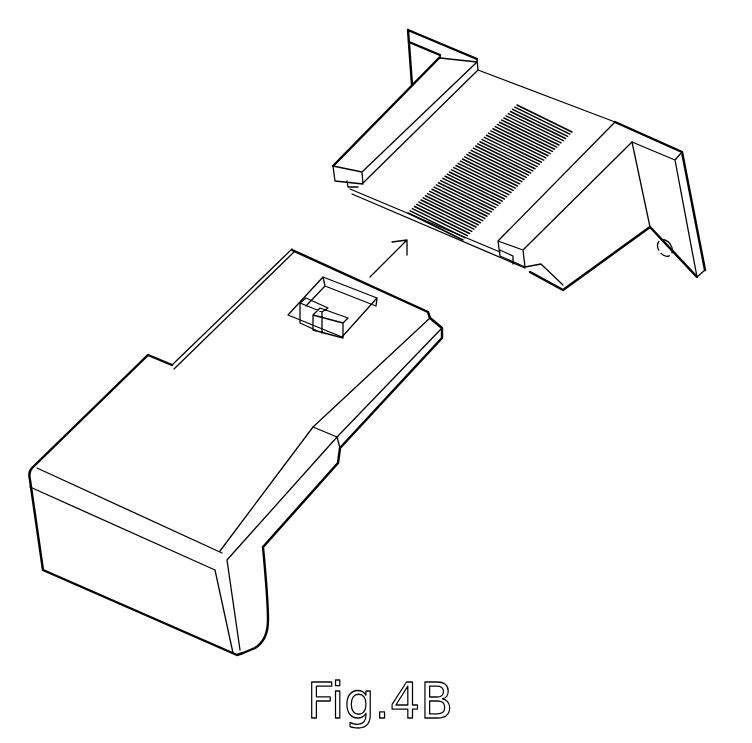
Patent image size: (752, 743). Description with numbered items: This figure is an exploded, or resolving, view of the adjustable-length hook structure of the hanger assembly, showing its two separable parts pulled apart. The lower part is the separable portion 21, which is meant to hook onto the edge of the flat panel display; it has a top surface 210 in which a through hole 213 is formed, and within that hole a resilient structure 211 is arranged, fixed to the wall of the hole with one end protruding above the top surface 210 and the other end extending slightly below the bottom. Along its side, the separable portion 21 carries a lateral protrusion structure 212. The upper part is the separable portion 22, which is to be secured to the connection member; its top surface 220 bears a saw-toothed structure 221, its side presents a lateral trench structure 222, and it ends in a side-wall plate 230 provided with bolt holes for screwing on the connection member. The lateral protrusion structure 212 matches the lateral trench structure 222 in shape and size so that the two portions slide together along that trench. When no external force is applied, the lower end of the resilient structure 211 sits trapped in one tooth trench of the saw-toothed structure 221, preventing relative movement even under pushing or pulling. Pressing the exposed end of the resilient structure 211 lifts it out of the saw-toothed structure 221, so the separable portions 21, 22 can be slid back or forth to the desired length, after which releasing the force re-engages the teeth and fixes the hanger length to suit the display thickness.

The separable portion 21 is at (262, 472).
The top surface 210 is at (235, 345).
The resilient structure 211 is at (302, 302).
The lateral protrusion structure 212 is at (358, 400).
The through hole 213 is at (345, 312).
The separable portion 22 is at (588, 242).
The top surface 220 is at (482, 104).
The saw-toothed structure 221 is at (543, 127).
The lateral trench structure 222 is at (498, 261).
The side-wall plate 230 is at (650, 132).